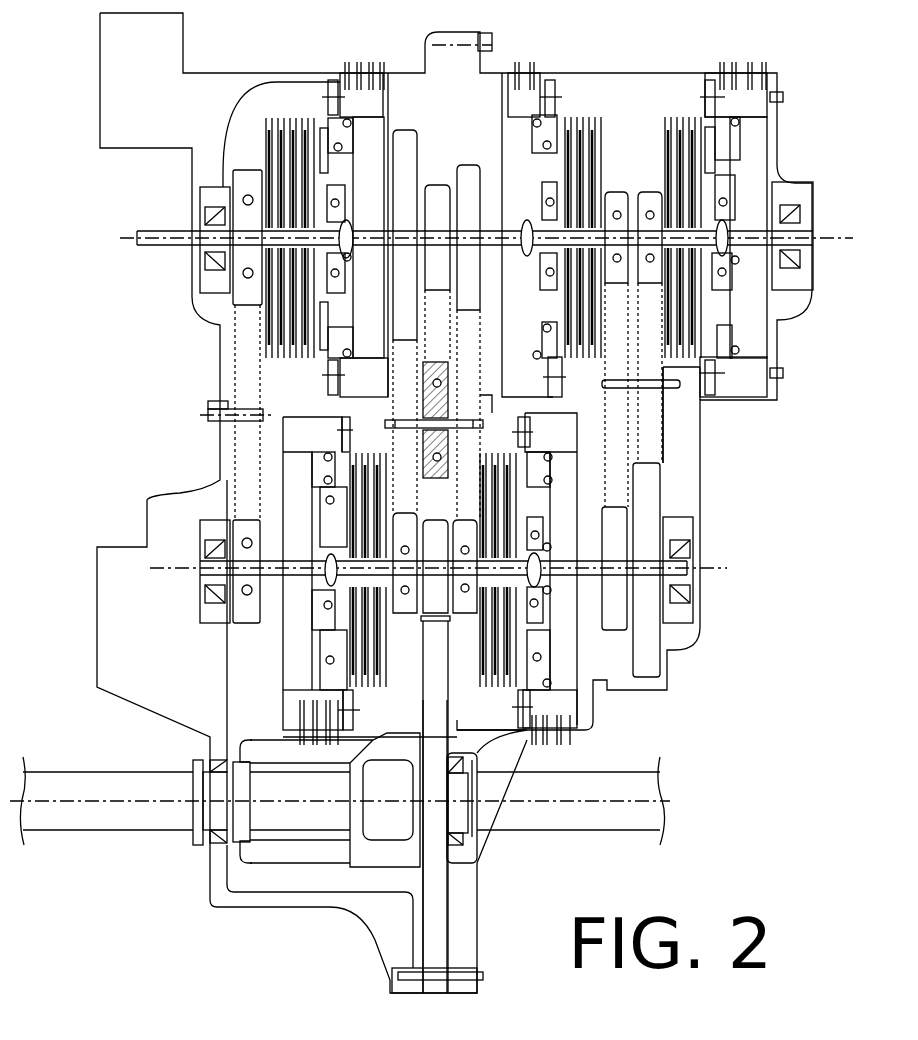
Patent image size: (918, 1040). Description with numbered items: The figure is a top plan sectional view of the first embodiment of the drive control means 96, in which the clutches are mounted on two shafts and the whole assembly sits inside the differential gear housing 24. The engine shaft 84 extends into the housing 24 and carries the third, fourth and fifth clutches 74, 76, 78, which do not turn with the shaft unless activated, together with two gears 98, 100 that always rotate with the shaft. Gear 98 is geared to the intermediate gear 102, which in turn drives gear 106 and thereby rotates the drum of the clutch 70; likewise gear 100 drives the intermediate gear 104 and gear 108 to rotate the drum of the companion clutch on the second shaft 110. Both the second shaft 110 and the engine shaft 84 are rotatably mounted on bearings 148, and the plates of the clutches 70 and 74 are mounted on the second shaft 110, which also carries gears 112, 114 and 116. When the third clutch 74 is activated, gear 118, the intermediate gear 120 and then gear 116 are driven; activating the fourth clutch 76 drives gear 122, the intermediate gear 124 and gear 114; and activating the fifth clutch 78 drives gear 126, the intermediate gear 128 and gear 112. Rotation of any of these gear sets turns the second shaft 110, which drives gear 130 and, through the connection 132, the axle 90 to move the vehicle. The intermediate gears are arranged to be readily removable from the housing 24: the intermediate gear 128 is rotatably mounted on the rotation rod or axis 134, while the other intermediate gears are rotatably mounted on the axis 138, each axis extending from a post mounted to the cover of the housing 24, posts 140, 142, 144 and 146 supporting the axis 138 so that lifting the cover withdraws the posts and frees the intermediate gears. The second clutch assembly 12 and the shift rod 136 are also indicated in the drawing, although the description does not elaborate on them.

The second clutch assembly 12 is at (582, 630).
The differential gear housing 24 is at (612, 73).
The clutch 70 is at (278, 672).
The third clutch 74 is at (694, 102).
The fourth clutch 76 is at (583, 108).
The fifth clutch 78 is at (406, 116).
The engine shaft 84 is at (170, 247).
The axle 90 is at (596, 812).
The drive control means 96 is at (765, 513).
The gear 98 is at (412, 172).
The gear 100 is at (476, 190).
The intermediate gear 102 is at (397, 427).
The intermediate gear 104 is at (468, 368).
The gear 106 is at (407, 608).
The gear 108 is at (468, 608).
The second shaft 110 is at (687, 573).
The gear 112 is at (250, 610).
The gear 114 is at (617, 530).
The gear 116 is at (652, 487).
The gear 118 is at (648, 197).
The intermediate gear 120 is at (653, 417).
The gear 122 is at (617, 200).
The intermediate gear 124 is at (670, 455).
The gear 126 is at (240, 188).
The intermediate gear 128 is at (247, 355).
The gear 130 is at (438, 533).
The connection 132 is at (440, 913).
The rotation rod or axis 134 is at (237, 427).
The shift rod 136 is at (607, 383).
The axis 138 is at (385, 430).
The post 140 is at (367, 425).
The post 142 is at (418, 412).
The post 144 is at (457, 432).
The post 146 is at (480, 425).
The bearings 148 is at (208, 202).